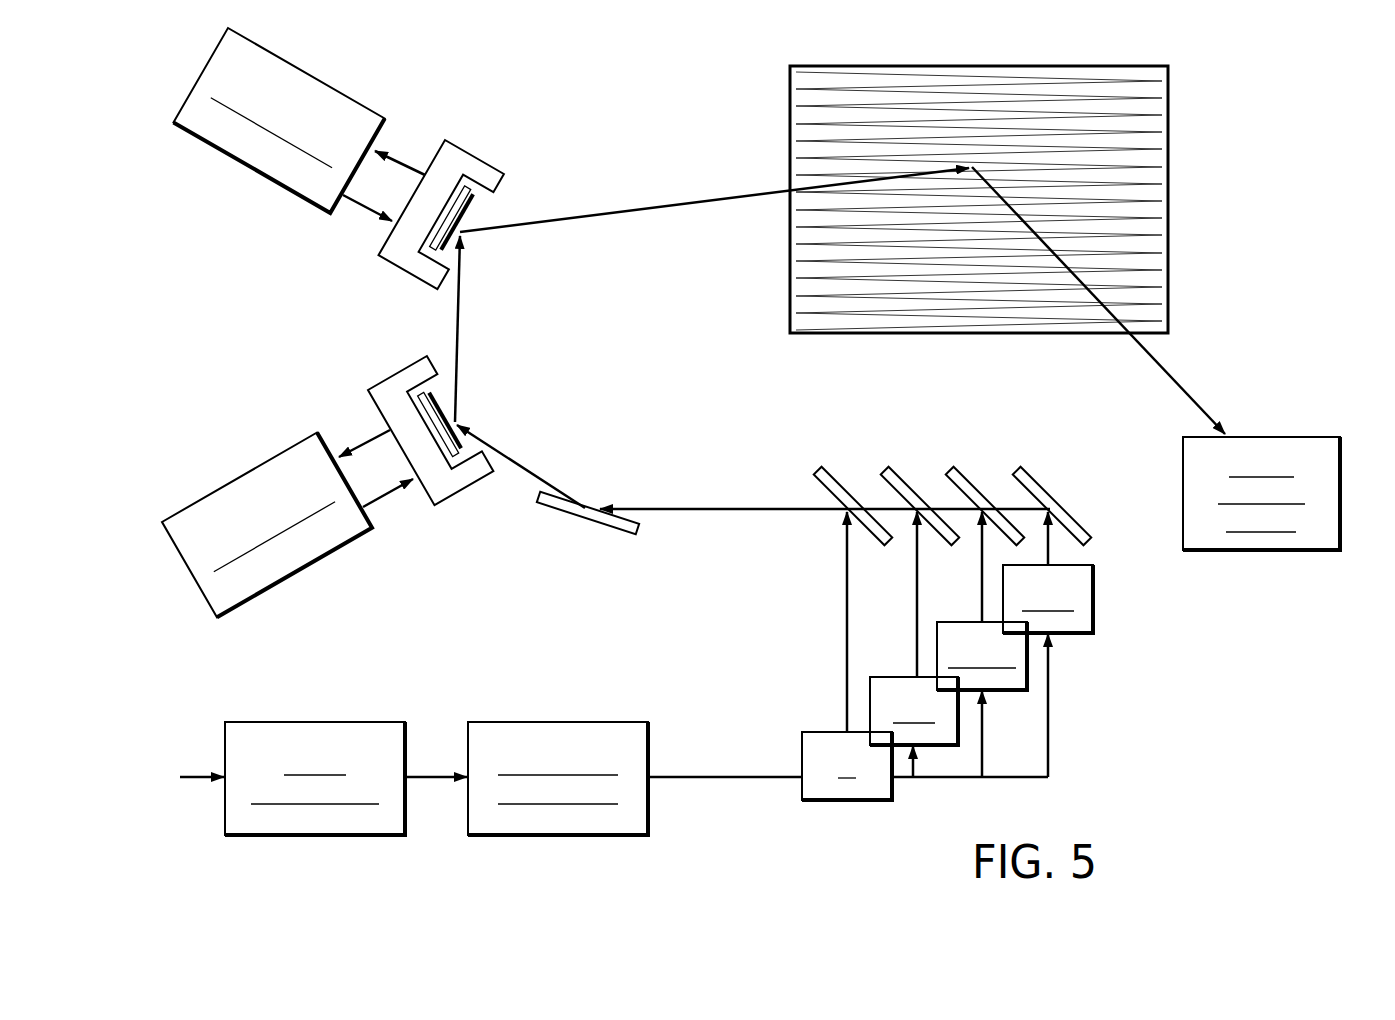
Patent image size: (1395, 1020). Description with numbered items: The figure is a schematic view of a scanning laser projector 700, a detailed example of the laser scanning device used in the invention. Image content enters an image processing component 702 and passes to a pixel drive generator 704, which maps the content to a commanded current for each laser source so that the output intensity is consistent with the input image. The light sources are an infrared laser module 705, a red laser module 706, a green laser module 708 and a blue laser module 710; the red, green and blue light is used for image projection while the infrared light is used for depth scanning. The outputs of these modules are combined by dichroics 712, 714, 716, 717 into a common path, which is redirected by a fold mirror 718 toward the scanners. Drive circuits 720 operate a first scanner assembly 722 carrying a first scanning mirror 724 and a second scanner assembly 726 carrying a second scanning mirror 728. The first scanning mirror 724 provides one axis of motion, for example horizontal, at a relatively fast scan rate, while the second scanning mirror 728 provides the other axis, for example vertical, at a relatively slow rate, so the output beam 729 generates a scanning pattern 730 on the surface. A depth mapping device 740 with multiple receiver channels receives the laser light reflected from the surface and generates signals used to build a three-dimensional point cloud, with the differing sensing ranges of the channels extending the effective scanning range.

The scanning laser projector 700 is at (225, 868).
The image processing component 702 is at (290, 836).
The pixel drive generator 704 is at (533, 836).
The infrared laser module 705 is at (802, 732).
The red laser module 706 is at (875, 676).
The green laser module 708 is at (1009, 691).
The blue laser module 710 is at (1094, 598).
The dichroic 712 is at (1026, 472).
The dichroic 714 is at (960, 471).
The dichroic 716 is at (893, 471).
The dichroic 717 is at (828, 471).
The fold mirror 718 is at (614, 529).
The drive circuits 720 is at (182, 107).
The first scanner assembly 722 is at (373, 377).
The first scanning mirror 724 is at (458, 418).
The second scanner assembly 726 is at (374, 248).
The second scanning mirror 728 is at (480, 202).
The output beam 729 is at (650, 211).
The scanning pattern 730 is at (1168, 298).
The depth mapping device 740 is at (1304, 436).